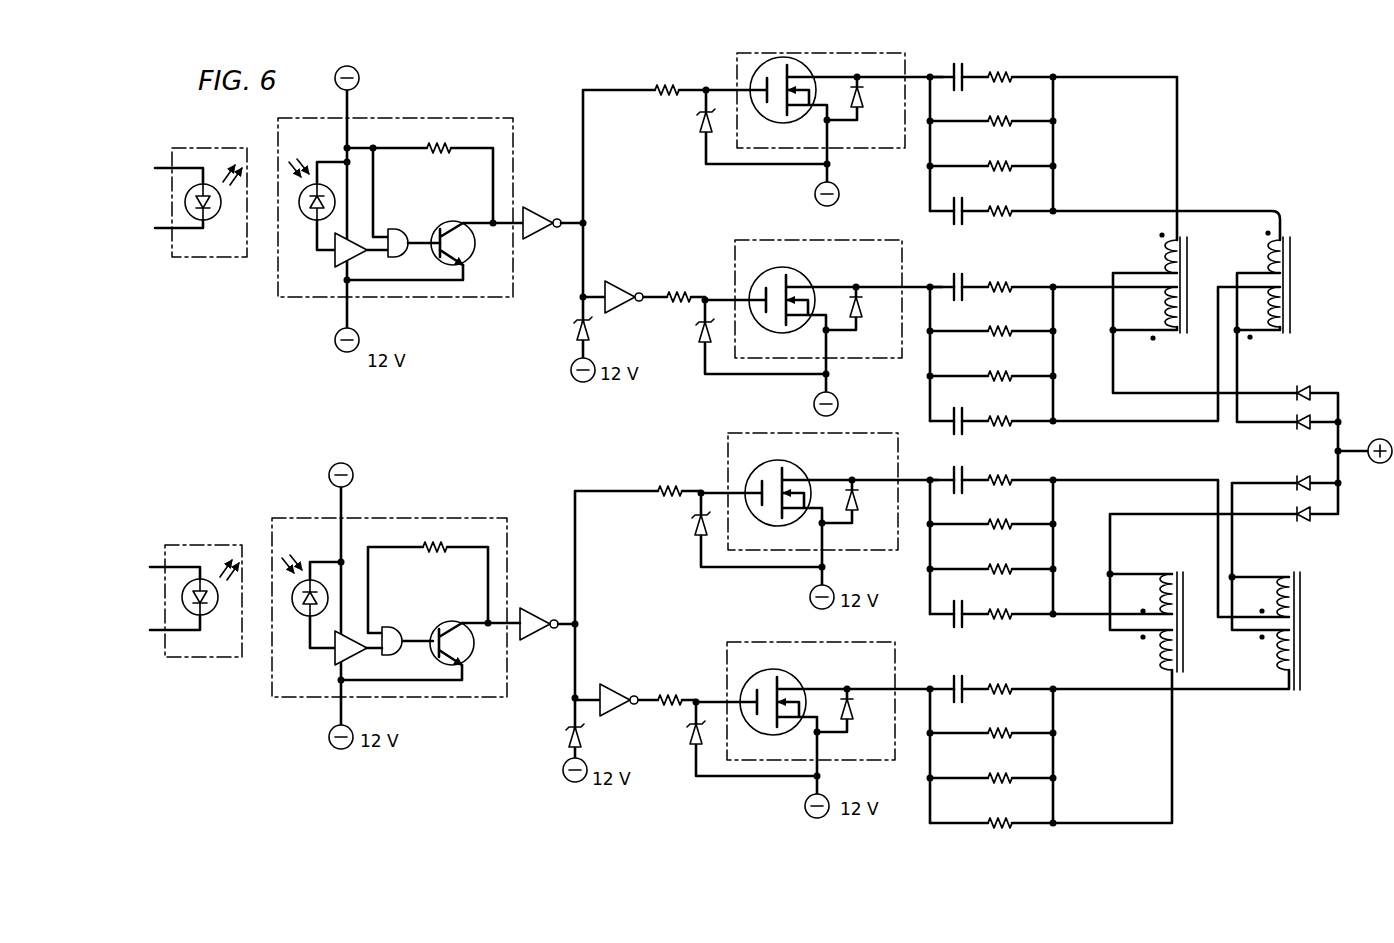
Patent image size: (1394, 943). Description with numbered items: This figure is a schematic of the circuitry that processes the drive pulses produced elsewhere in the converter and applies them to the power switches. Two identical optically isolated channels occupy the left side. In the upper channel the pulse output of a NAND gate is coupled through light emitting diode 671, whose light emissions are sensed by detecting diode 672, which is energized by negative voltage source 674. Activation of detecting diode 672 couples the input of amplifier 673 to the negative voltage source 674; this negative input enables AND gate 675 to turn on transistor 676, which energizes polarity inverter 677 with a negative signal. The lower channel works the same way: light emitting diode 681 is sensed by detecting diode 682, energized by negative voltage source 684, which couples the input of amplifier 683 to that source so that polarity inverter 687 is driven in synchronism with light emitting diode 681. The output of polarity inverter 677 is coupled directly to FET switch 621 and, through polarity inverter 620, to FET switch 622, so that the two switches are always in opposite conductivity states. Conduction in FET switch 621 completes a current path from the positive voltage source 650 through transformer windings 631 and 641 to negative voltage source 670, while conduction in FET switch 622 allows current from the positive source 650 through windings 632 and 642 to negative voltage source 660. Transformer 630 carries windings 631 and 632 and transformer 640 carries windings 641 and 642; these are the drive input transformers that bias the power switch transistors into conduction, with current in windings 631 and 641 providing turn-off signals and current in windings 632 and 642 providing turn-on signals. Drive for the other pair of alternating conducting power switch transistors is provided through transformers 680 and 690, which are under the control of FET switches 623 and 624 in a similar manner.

The polarity inverter 620 is at (629, 287).
The FET switch 621 is at (768, 121).
The FET switch 622 is at (762, 330).
The FET switch 623 is at (790, 463).
The FET switch 624 is at (785, 670).
The transformer 630 is at (1170, 279).
The transformer winding 631 is at (1153, 248).
The transformer winding 632 is at (1152, 316).
The transformer 640 is at (1334, 318).
The transformer winding 641 is at (1282, 238).
The transformer winding 642 is at (1268, 332).
The positive voltage source 650 is at (1378, 439).
The negative voltage source 660 is at (835, 396).
The negative voltage source 670 is at (836, 186).
The light emitting diode 671 is at (216, 257).
The detecting diode 672 is at (305, 219).
The amplifier 673 is at (350, 268).
The negative voltage source 674 is at (357, 70).
The AND gate 675 is at (400, 221).
The transistor 676 is at (464, 212).
The polarity inverter 677 is at (545, 205).
The transformer 680 is at (1177, 556).
The light emitting diode 681 is at (215, 545).
The detecting diode 682 is at (299, 616).
The amplifier 683 is at (350, 666).
The negative voltage source 684 is at (351, 466).
The polarity inverter 687 is at (537, 604).
The transformer 690 is at (1301, 556).